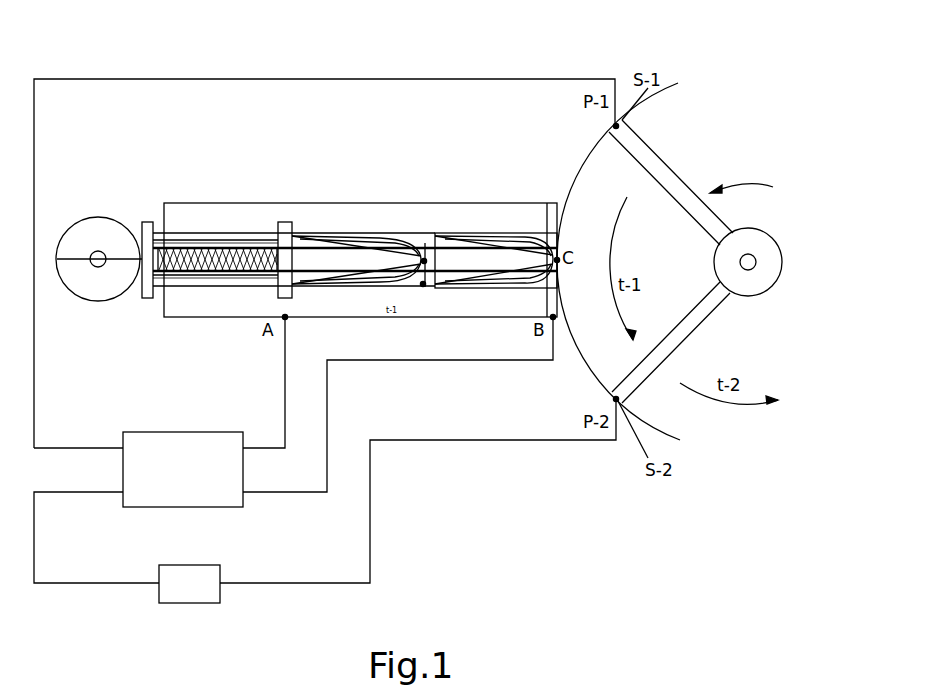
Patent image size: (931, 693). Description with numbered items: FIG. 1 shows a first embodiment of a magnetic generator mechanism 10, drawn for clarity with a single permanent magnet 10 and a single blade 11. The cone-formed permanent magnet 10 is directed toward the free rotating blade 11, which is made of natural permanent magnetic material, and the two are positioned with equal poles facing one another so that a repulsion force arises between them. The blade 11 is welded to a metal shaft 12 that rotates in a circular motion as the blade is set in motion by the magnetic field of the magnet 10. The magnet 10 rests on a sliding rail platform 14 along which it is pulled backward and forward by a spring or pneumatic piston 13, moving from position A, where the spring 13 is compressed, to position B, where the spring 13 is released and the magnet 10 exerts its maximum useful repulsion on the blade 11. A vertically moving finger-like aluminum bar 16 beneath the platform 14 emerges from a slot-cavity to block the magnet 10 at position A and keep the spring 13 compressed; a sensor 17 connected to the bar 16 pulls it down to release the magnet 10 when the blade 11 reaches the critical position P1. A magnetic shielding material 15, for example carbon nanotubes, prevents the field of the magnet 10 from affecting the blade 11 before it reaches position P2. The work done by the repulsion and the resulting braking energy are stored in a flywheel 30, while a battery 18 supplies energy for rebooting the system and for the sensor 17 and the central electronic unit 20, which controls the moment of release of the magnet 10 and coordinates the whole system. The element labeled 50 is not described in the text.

The permanent magnet 10 is at (748, 72).
The blade 11 is at (680, 193).
The metal shaft 12 is at (762, 253).
The spring 13 is at (188, 272).
The sliding rail platform 14 is at (378, 245).
The magnetic shielding material 15 is at (552, 218).
The aluminum bar 16 is at (422, 268).
The sensor 17 is at (423, 285).
The battery 18 is at (167, 605).
The central electronic unit 20 is at (148, 508).
The flywheel 30 is at (102, 285).
The rod 50 is at (347, 270).